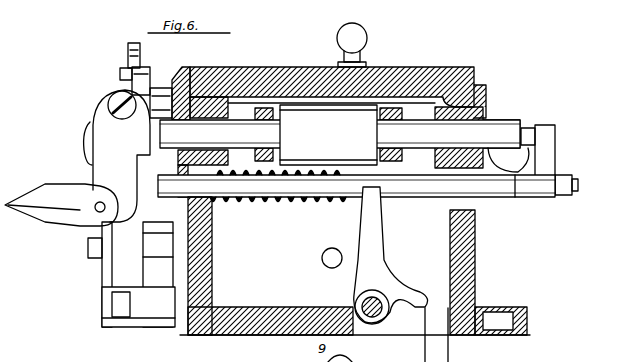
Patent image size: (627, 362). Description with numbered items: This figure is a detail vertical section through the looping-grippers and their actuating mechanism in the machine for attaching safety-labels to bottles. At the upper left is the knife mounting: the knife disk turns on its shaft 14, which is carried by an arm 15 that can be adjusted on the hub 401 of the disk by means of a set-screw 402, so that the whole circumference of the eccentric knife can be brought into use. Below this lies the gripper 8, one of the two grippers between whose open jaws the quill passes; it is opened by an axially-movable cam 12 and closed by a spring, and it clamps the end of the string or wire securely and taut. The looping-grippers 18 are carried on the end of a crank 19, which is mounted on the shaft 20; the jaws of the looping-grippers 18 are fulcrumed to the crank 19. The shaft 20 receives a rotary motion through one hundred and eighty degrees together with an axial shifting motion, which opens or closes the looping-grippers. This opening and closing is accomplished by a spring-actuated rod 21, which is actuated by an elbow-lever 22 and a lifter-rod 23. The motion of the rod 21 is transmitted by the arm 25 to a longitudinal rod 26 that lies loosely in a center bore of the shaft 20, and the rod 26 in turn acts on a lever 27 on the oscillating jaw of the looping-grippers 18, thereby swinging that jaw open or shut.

The gripper 8 is at (130, 274).
The axially-movable cam 12 is at (132, 326).
The shaft 14 is at (190, 74).
The arm 15 is at (141, 51).
The looping-grippers 18 is at (60, 214).
The crank 19 is at (121, 156).
The shaft 20 is at (200, 128).
The spring-actuated rod 21 is at (432, 185).
The elbow-lever 22 is at (372, 266).
The lifter-rod 23 is at (440, 352).
The arm 25 is at (548, 165).
The longitudinal rod 26 is at (527, 128).
The lever 27 is at (88, 145).
The hub 401 is at (128, 74).
The set-screw 402 is at (127, 70).